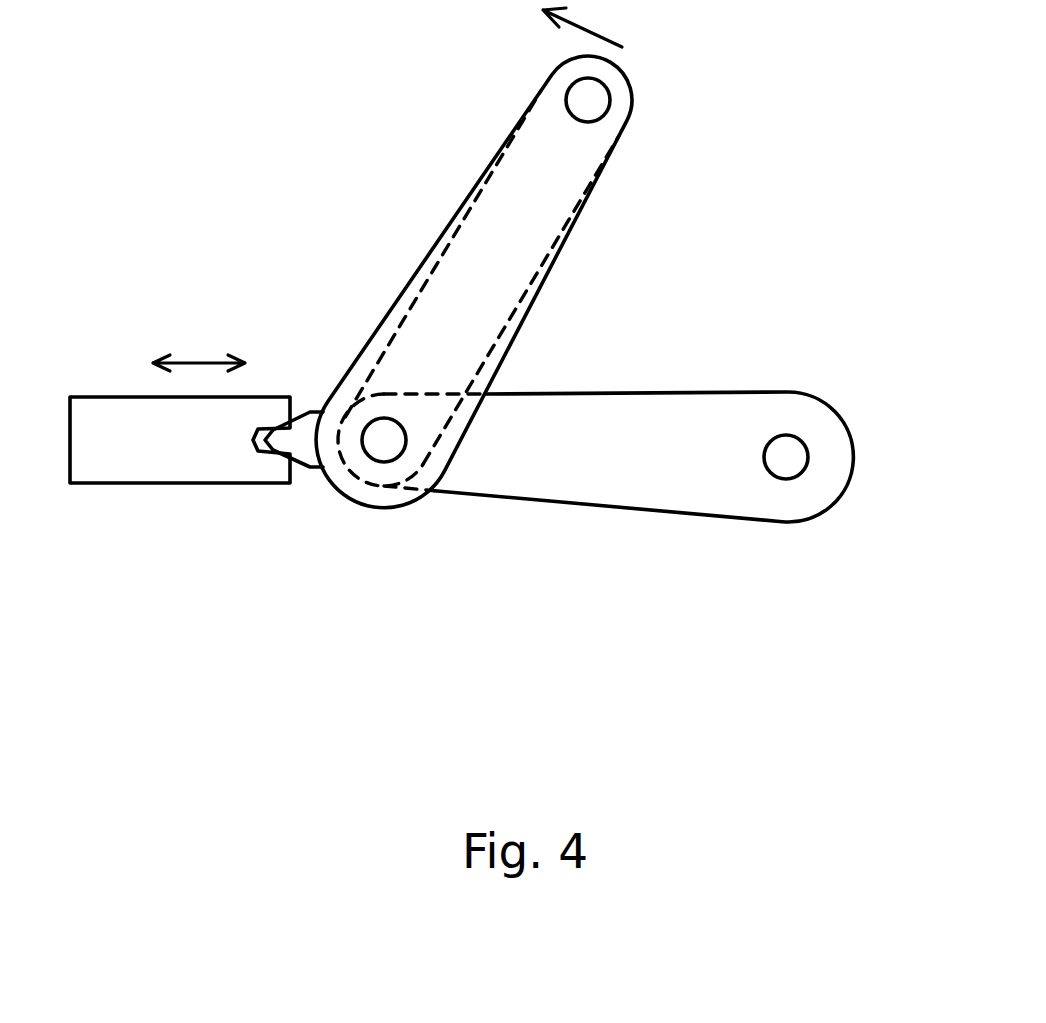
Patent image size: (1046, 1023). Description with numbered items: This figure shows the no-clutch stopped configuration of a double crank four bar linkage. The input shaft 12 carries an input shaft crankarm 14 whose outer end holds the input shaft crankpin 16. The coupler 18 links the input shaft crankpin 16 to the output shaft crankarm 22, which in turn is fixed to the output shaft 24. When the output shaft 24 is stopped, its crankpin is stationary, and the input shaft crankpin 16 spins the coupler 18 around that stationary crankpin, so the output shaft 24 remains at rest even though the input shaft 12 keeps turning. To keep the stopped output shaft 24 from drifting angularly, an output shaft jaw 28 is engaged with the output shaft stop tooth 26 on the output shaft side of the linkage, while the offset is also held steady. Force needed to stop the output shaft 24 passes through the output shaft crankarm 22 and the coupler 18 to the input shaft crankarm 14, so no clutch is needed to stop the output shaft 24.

The input shaft 12 is at (384, 462).
The input shaft crankarm 14 is at (453, 210).
The input shaft crankpin 16 is at (609, 95).
The coupler 18 is at (392, 342).
The output shaft crankarm 22 is at (633, 512).
The output shaft 24 is at (787, 434).
The output shaft stop tooth 26 is at (308, 467).
The output shaft jaw 28 is at (187, 483).